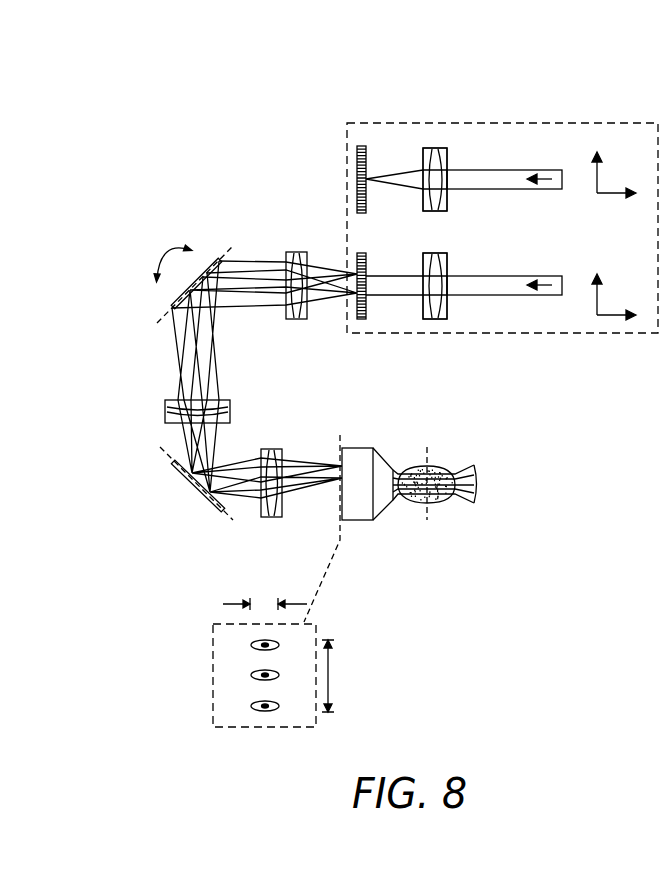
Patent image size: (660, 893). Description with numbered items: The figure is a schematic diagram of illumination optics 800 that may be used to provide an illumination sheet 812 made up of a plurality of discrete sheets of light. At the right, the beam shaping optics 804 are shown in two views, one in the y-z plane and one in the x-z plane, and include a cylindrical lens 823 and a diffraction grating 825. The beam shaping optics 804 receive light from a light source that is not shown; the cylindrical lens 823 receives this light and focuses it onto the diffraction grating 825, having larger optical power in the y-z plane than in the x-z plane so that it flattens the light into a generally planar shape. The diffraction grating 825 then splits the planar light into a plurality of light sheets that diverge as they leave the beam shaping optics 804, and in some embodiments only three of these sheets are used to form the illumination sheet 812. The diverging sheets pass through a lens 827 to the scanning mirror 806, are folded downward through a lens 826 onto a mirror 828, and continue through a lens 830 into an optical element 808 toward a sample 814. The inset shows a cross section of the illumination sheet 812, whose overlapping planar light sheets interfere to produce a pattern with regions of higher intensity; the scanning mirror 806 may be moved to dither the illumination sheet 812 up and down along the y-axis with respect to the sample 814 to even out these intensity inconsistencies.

The optical system 800 is at (168, 120).
The beam shaping optics 804 is at (420, 123).
The scanning mirror 806 is at (172, 300).
The optical element 808 is at (358, 448).
The illumination sheet 812 is at (222, 624).
The lens 814 is at (438, 466).
The cylindrical lens 823 is at (436, 211).
The diffraction grating 825 is at (362, 213).
The lens 826 is at (165, 410).
The lens 827 is at (292, 252).
The fold mirror 828 is at (190, 486).
The lens 830 is at (268, 449).